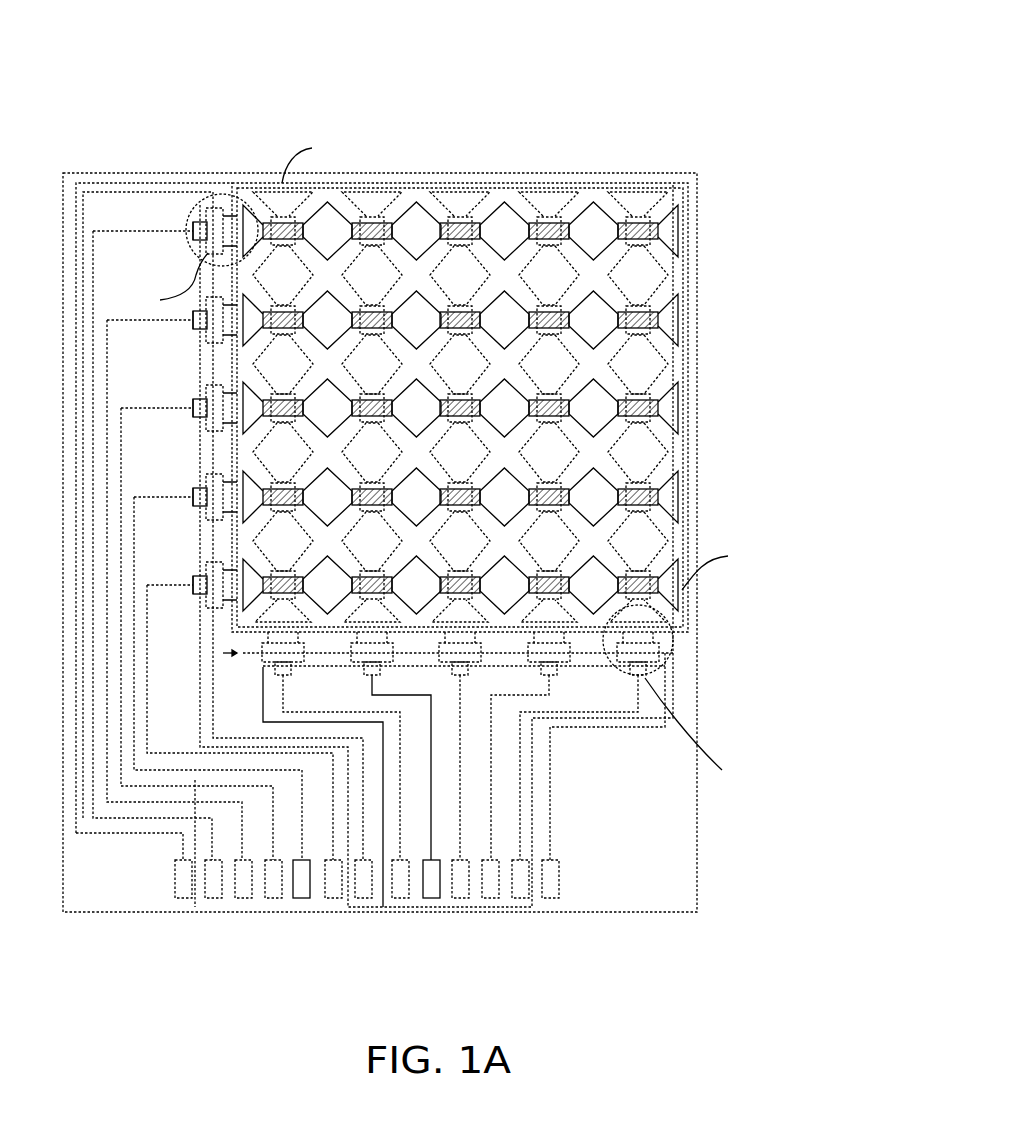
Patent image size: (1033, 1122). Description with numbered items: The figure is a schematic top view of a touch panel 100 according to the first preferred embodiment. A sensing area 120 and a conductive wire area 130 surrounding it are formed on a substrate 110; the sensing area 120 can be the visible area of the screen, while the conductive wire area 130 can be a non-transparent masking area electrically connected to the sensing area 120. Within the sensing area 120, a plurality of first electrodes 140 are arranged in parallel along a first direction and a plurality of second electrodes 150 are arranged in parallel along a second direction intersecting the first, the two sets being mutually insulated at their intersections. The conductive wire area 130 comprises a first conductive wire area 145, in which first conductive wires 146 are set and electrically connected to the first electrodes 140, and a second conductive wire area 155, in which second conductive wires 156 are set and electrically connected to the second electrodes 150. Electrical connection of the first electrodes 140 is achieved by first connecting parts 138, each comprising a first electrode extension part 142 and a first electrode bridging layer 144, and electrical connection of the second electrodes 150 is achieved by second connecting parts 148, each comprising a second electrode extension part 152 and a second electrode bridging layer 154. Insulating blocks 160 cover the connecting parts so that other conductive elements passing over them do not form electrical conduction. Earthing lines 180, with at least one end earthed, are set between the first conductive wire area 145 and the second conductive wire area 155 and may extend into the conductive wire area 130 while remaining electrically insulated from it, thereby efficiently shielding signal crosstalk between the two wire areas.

The touch panel 100 is at (722, 85).
The substrate 110 is at (654, 895).
The sensing area 120 is at (688, 422).
The conductive wire area 130 is at (379, 493).
The first connecting parts 138 is at (230, 309).
The first electrodes 140 is at (610, 296).
The first electrode extension part 142 is at (224, 205).
The first electrode bridging layer 144 is at (200, 205).
The first conductive wire area 145 is at (242, 909).
The first conductive wires 146 is at (176, 188).
The second connecting parts 148 is at (540, 693).
The second electrodes 150 is at (548, 262).
The second electrode extension part 152 is at (650, 636).
The second electrode bridging layer 154 is at (671, 728).
The second conductive wire area 155 is at (513, 909).
The second conductive wires 156 is at (400, 807).
The insulating blocks 160 is at (437, 523).
The earthing lines 180 is at (101, 183).